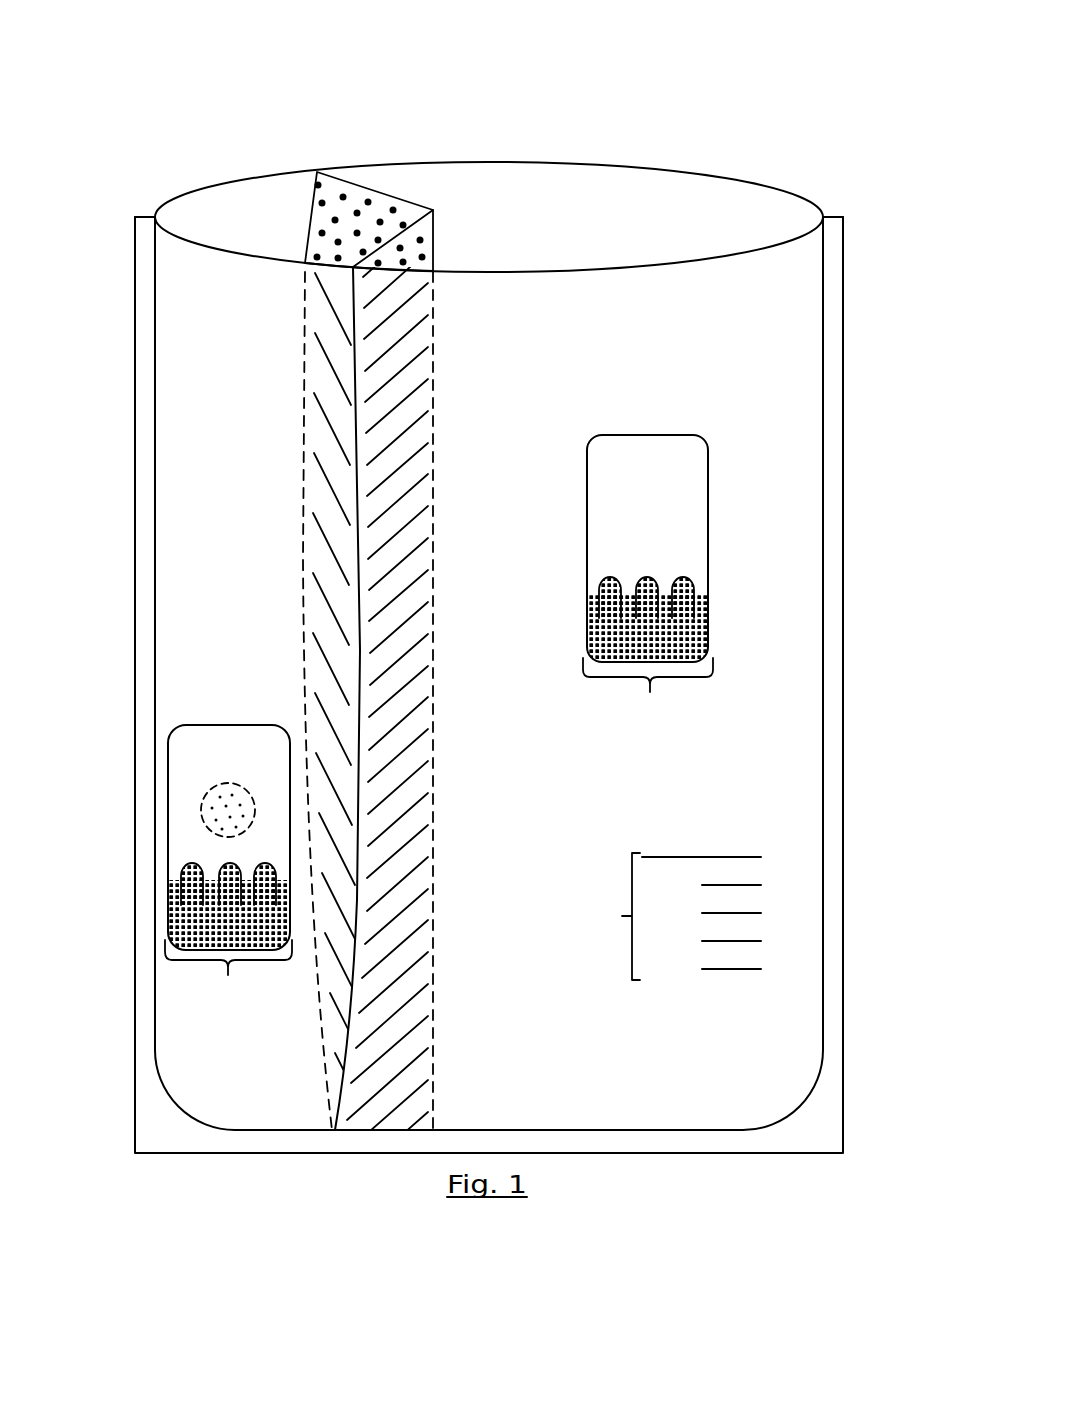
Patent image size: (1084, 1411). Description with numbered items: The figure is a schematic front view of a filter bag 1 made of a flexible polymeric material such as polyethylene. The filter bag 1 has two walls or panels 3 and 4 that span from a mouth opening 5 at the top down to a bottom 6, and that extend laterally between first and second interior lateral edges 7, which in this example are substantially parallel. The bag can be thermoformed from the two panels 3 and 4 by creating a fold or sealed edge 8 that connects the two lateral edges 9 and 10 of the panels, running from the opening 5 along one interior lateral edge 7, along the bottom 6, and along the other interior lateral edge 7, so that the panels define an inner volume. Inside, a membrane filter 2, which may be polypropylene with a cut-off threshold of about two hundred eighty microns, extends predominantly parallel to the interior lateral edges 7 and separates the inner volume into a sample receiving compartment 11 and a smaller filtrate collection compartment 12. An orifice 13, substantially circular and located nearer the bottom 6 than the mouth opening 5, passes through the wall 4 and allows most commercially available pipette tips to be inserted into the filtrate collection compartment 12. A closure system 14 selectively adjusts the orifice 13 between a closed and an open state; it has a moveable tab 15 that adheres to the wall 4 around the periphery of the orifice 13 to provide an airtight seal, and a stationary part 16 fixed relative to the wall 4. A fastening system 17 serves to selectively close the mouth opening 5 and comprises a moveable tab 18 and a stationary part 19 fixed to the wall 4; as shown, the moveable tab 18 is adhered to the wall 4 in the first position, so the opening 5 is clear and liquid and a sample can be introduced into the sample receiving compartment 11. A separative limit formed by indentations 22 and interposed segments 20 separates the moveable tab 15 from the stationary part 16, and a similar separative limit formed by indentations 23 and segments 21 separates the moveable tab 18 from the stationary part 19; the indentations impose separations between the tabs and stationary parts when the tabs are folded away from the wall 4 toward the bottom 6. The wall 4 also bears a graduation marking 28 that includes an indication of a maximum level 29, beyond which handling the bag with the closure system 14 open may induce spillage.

The filter bag 1 is at (288, 104).
The membrane filter 2 is at (333, 470).
The wall or panel 3 is at (585, 163).
The wall or panel 4 is at (775, 243).
The mouth opening 5 is at (670, 200).
The bottom 6 is at (655, 1133).
The interior lateral edge 7 is at (155, 310).
The fold or sealed edge 8 is at (140, 470).
The lateral edge 9 is at (155, 217).
The lateral edge 10 is at (823, 215).
The sample receiving compartment 11 is at (675, 795).
The filtrate collection compartment 12 is at (222, 525).
The orifice 13 is at (228, 808).
The closure system 14 is at (228, 975).
The moveable tab 15 is at (193, 768).
The stationary part 16 is at (227, 915).
The fastening system 17 is at (648, 692).
The moveable tab 18 is at (655, 465).
The stationary part 19 is at (657, 628).
The segment 20 is at (270, 910).
The segment 21 is at (598, 608).
The indentation 22 is at (265, 864).
The indentation 23 is at (610, 577).
The graduation marking 28 is at (614, 916).
The maximum level 29 is at (705, 856).